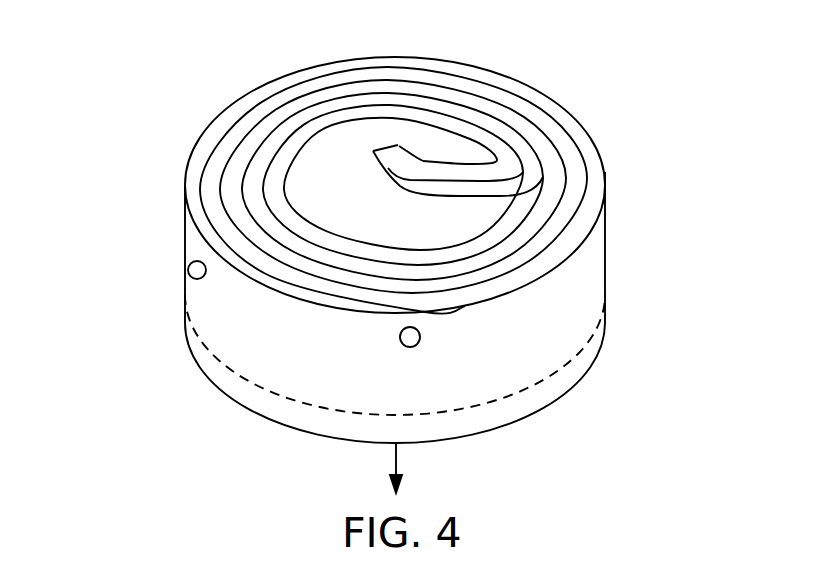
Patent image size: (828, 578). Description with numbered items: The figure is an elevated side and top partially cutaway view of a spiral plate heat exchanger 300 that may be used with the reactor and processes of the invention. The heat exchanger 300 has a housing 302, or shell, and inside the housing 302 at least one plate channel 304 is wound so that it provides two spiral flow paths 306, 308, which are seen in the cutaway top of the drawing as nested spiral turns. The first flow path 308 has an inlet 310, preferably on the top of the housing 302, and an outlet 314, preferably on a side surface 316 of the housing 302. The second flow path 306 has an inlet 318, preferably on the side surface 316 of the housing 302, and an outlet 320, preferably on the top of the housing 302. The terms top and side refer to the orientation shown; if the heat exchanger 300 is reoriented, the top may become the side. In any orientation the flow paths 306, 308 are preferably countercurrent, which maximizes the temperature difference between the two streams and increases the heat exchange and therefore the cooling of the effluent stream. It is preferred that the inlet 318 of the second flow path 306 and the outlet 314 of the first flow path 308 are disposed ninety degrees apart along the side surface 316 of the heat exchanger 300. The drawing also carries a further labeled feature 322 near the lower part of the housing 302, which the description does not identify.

The spiral plate heat exchanger 300 is at (150, 86).
The housing 302 is at (183, 232).
The plate channel 304 is at (309, 97).
The second flow path 306 is at (563, 113).
The first flow path 308 is at (575, 187).
The inlet 310 is at (387, 163).
The outlet 314 is at (402, 343).
The side surface 316 is at (563, 282).
The inlet 318 is at (187, 276).
The outlet 320 is at (400, 156).
The hidden bottom seam line 322 is at (268, 407).